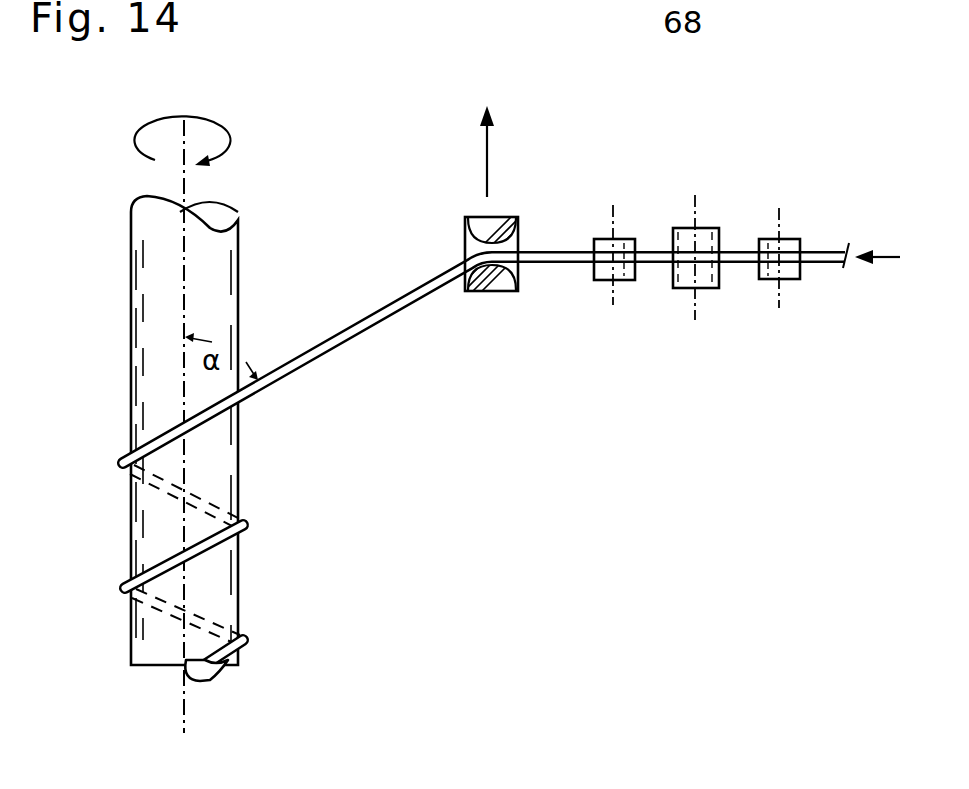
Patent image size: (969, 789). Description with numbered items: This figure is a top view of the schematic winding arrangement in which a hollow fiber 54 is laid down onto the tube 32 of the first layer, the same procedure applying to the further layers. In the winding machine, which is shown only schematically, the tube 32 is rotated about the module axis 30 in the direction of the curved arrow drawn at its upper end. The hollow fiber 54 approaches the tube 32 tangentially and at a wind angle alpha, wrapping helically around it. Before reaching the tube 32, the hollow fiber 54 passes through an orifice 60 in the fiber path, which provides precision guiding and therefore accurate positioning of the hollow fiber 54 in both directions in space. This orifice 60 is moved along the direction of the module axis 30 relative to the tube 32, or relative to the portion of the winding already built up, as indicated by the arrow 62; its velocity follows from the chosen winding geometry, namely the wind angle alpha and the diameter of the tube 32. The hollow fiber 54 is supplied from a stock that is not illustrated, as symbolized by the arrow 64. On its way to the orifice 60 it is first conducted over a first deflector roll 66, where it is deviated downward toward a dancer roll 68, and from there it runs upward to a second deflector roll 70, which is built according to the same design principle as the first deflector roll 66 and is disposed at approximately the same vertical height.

The module axis 30 is at (188, 712).
The tube 32 is at (213, 253).
The hollow fiber 54 is at (330, 350).
The orifice 60 is at (505, 293).
The arrow 62 is at (487, 152).
The arrow 64 is at (886, 247).
The first deflector roll 66 is at (785, 272).
The dancer roll 68 is at (690, 288).
The second deflector roll 70 is at (612, 281).